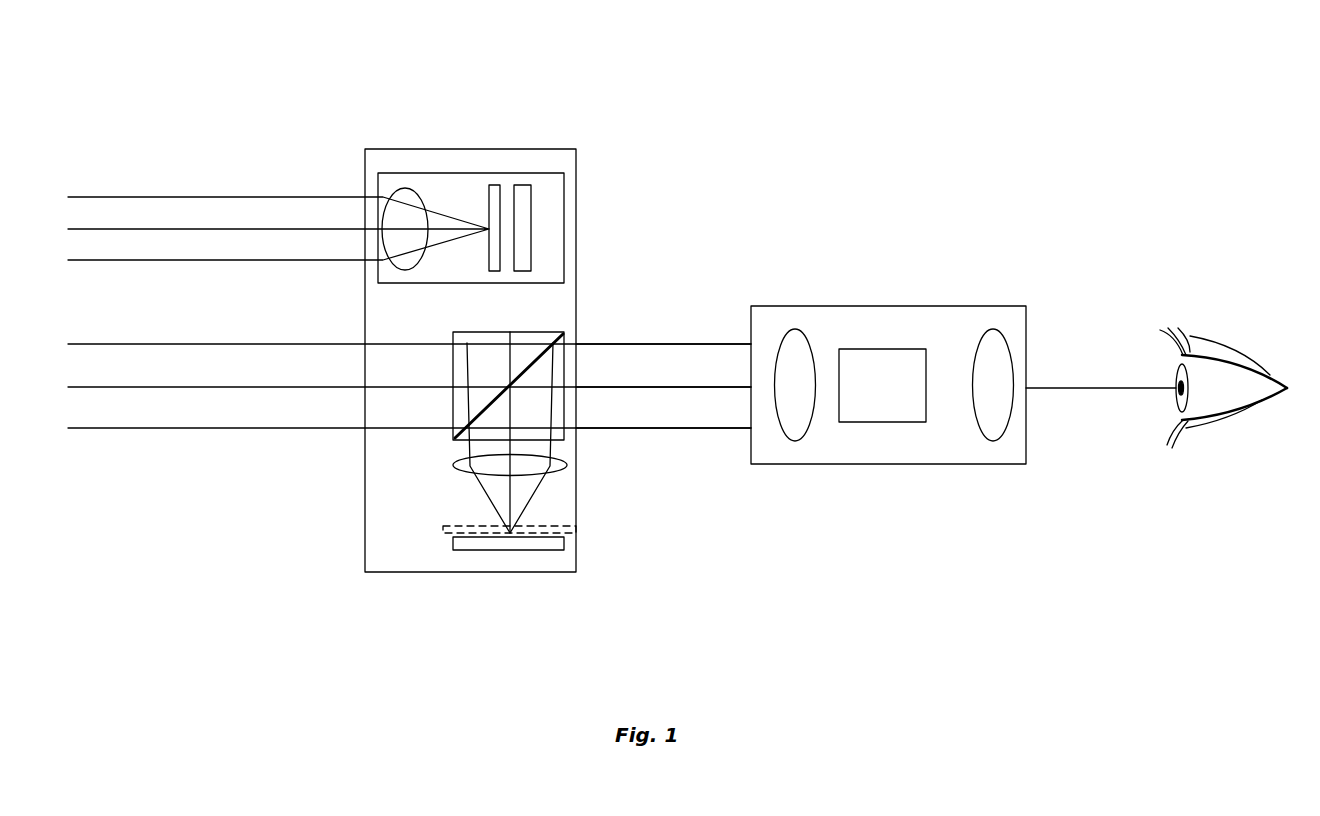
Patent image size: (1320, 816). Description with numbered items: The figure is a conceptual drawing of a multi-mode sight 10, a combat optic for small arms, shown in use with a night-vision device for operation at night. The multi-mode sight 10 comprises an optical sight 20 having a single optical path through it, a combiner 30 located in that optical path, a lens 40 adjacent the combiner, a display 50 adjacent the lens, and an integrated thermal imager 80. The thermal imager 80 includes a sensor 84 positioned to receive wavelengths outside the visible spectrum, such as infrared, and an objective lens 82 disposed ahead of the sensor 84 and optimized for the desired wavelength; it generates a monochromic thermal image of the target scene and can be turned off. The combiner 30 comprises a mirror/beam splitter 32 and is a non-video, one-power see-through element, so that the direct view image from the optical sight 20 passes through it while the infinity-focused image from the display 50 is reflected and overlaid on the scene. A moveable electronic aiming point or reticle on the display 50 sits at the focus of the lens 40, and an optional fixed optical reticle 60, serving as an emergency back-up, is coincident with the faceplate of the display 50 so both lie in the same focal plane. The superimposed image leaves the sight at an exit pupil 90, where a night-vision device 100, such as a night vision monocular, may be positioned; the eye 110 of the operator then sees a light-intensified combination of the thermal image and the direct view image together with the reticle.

The multi-mode sight 10 is at (326, 109).
The optical sight 20 is at (375, 573).
The combiner 30 is at (400, 459).
The mirror/beam splitter 32 is at (563, 333).
The lens 40 is at (567, 462).
The display 50 is at (565, 543).
The fixed optical reticle 60 is at (570, 523).
The thermal imager 80 is at (564, 200).
The objective lens 82 is at (405, 188).
The sensor 84 is at (493, 185).
The exit pupil 90 is at (731, 450).
The night-vision device 100 is at (855, 306).
The eye 110 is at (1218, 296).